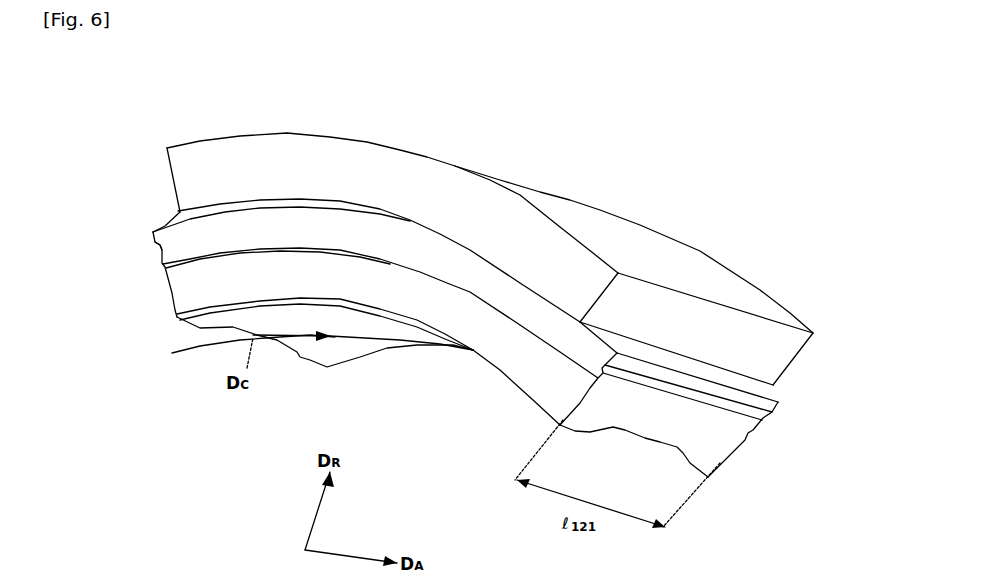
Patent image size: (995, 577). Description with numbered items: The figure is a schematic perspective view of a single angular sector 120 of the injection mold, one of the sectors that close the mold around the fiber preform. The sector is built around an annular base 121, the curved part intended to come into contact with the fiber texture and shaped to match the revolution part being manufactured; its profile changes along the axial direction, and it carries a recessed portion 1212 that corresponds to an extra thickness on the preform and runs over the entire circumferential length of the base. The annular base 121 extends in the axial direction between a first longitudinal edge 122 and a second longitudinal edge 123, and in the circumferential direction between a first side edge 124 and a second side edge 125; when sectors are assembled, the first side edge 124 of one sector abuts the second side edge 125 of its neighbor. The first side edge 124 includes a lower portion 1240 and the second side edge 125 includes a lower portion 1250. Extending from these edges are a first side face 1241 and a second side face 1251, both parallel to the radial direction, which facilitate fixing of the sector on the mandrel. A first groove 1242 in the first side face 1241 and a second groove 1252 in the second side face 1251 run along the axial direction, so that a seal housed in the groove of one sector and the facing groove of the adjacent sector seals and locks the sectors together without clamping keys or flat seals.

The angular sector 120 is at (490, 236).
The annular base 121 is at (406, 378).
The recessed portion 1212 is at (325, 364).
The first longitudinal edge 122 is at (289, 297).
The second longitudinal edge 123 is at (700, 425).
The first side edge 124 is at (338, 292).
The lower portion 1240 is at (216, 342).
The first side face 1241 is at (138, 209).
The first groove 1242 is at (119, 239).
The second side edge 125 is at (669, 416).
The lower portion 1250 is at (629, 450).
The second side face 1251 is at (733, 381).
The second groove 1252 is at (722, 405).